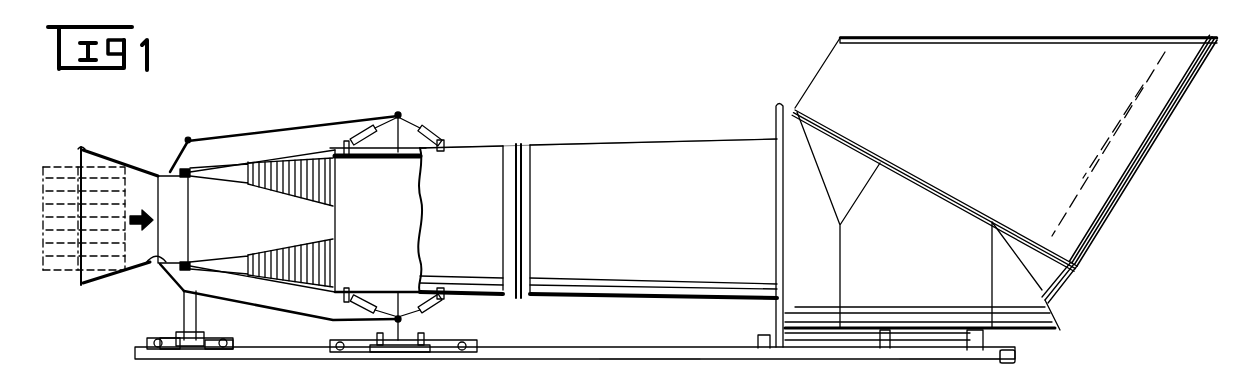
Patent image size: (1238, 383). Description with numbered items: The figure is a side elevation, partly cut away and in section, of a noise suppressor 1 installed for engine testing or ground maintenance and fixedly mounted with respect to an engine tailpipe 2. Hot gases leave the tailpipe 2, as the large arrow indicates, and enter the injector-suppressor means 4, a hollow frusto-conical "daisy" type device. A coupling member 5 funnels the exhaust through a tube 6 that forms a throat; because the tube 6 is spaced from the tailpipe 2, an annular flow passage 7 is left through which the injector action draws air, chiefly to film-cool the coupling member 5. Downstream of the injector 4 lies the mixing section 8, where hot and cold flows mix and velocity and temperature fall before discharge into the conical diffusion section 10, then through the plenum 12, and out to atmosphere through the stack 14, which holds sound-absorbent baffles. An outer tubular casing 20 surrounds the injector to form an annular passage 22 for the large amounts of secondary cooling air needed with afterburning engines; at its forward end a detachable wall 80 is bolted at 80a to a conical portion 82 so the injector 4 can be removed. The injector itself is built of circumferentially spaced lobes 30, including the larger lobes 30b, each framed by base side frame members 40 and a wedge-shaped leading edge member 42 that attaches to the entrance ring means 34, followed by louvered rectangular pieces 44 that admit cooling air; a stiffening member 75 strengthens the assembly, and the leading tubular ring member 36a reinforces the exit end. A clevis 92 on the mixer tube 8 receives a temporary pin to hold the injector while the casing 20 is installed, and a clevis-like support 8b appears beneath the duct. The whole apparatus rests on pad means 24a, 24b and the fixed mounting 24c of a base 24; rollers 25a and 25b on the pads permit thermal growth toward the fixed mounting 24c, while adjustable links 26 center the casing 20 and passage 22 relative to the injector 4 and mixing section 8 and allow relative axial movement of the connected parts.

The noise suppressor 1 is at (573, 128).
The engine tailpipe 2 is at (60, 277).
The injector-suppressor means 4 is at (262, 199).
The coupling member 5 is at (99, 282).
The tube 6 is at (151, 276).
The annular flow passage 7 is at (82, 284).
The mixing section 8 is at (465, 231).
The duct support 8b is at (650, 371).
The conical diffusion section 10 is at (649, 235).
The plenum 12 is at (918, 270).
The stack 14 is at (987, 132).
The casing 20 is at (391, 211).
The annular passage 22 is at (406, 140).
The base 24 is at (575, 356).
The pad means 24a is at (144, 343).
The pad means 24b is at (491, 345).
The fixed mounting 24c is at (1003, 341).
The roller member 25a is at (181, 345).
The roller member 25b is at (463, 342).
The links 26 is at (432, 133).
The lobes 30 is at (378, 220).
The large lobes 30b is at (352, 164).
The ring means 34 is at (190, 170).
The tubular member 36a is at (328, 147).
The base side frame members 40 is at (238, 188).
The solid structural member 42 is at (234, 250).
The rectangular pieces 44 is at (284, 198).
The stiffening member 75 is at (193, 272).
The wall 80 is at (170, 165).
The bolted joint 80a is at (186, 139).
The conical portion 82 is at (246, 131).
The clevis 92 is at (950, 371).